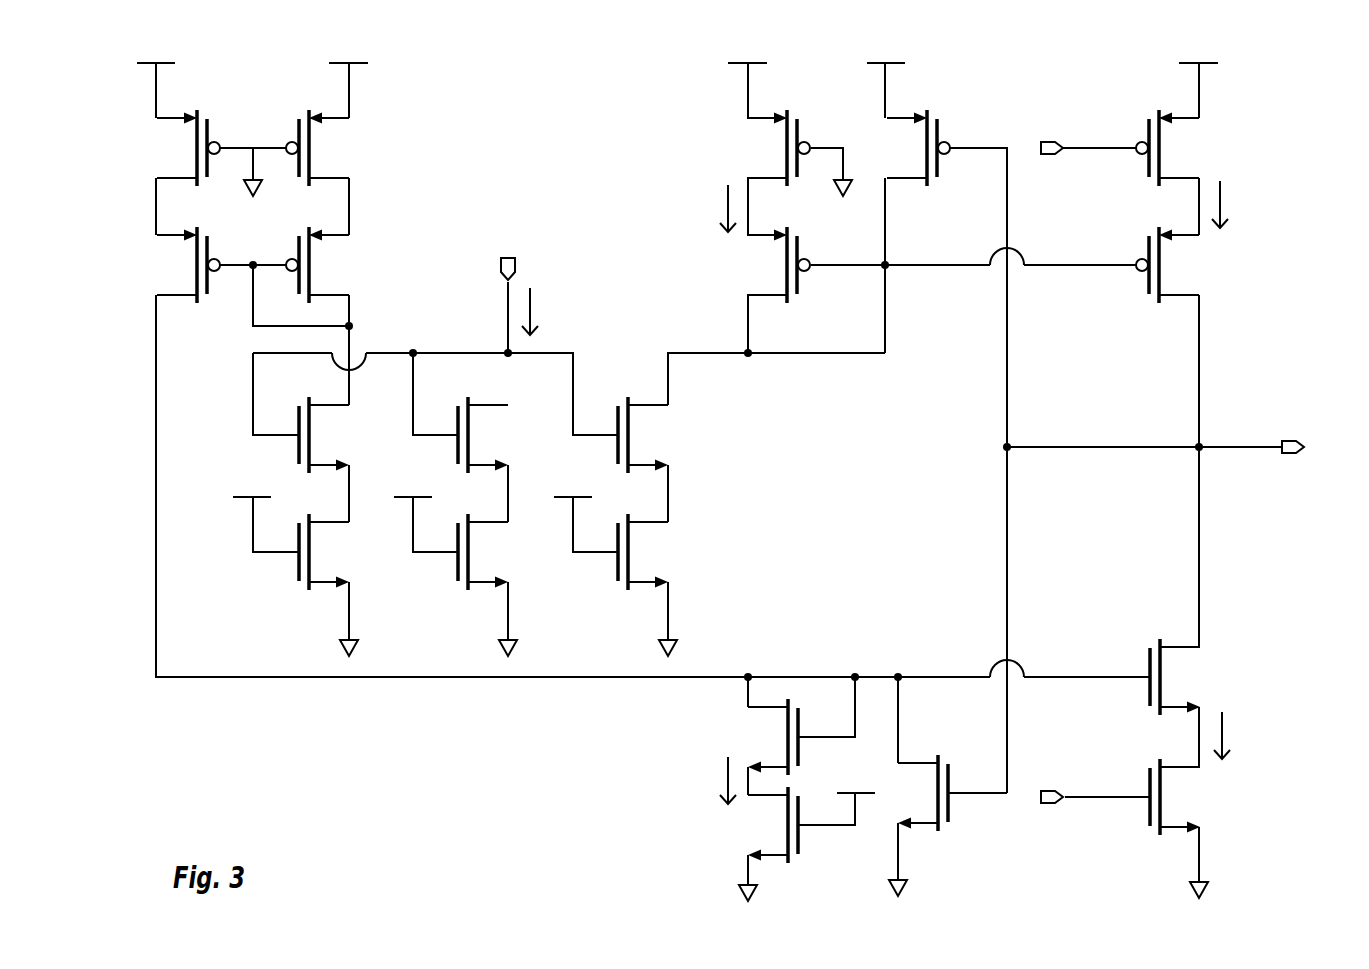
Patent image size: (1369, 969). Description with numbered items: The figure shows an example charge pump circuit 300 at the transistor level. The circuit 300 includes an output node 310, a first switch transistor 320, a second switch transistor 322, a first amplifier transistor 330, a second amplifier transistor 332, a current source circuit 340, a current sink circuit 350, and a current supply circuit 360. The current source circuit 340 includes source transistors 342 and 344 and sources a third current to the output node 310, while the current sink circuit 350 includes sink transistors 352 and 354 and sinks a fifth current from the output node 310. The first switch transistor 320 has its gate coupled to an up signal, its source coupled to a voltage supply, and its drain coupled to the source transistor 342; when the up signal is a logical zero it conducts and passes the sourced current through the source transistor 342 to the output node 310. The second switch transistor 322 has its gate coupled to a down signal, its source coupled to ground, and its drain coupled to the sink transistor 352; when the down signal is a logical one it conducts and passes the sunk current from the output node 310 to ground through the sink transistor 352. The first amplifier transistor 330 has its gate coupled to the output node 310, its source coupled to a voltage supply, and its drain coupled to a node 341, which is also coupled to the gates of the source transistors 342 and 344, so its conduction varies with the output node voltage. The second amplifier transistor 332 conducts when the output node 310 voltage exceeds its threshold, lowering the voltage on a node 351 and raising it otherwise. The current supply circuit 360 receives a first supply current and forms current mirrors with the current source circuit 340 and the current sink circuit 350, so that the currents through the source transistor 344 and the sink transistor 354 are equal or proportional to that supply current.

The charge pump circuit 300 is at (1253, 87).
The output node 310 is at (1199, 447).
The first switch transistor 320 is at (1173, 117).
The second switch transistor 322 is at (1178, 827).
The first amplifier transistor 330 is at (900, 117).
The second amplifier transistor 332 is at (917, 823).
The current source circuit 340 is at (1238, 142).
The node 341 is at (885, 265).
The source transistor 342 is at (1178, 298).
The source transistor 344 is at (765, 298).
The current sink circuit 350 is at (1241, 671).
The node 351 is at (898, 677).
The sink transistor 352 is at (1180, 647).
The sink transistor 354 is at (763, 707).
The current supply circuit 360 is at (448, 142).